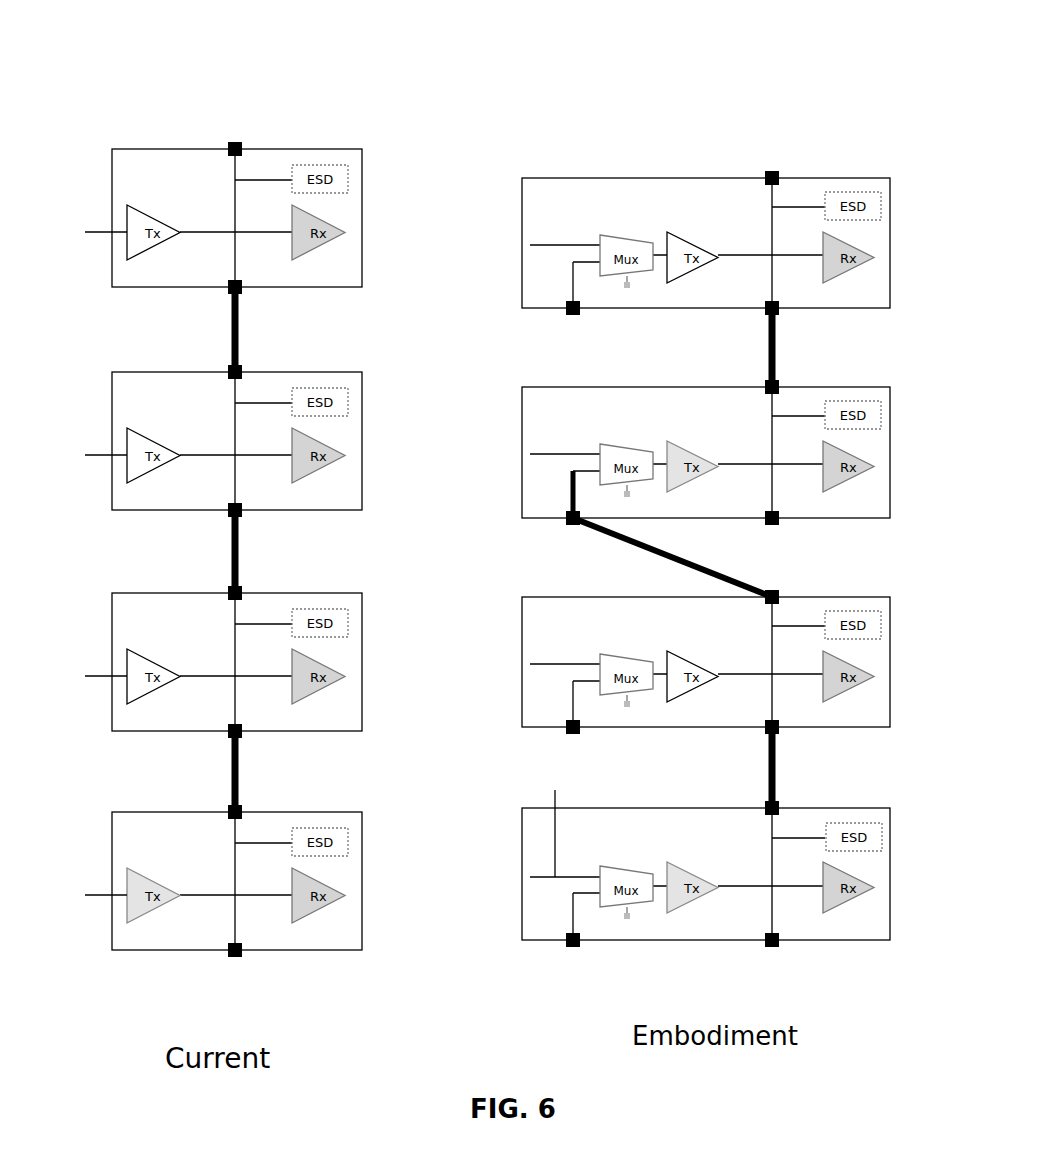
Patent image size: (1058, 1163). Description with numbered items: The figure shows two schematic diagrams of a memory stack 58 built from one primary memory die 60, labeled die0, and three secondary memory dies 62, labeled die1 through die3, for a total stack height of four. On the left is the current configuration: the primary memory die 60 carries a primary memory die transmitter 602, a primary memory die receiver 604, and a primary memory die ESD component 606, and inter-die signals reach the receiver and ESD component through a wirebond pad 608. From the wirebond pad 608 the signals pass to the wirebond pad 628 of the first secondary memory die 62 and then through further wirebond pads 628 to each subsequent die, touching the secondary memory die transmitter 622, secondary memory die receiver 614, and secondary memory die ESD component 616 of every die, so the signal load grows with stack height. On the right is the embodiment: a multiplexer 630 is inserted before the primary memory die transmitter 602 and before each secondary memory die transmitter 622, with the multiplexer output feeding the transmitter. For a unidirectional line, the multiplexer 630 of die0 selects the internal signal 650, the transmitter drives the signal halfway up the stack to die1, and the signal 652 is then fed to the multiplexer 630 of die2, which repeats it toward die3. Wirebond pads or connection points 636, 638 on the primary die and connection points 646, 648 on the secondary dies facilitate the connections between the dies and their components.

The memory stack 58 is at (230, 80).
The primary memory die 60 is at (362, 886).
The secondary memory die 62 is at (362, 218).
The primary memory die transmitter 602 is at (685, 785).
The primary memory die receiver 604 is at (898, 935).
The primary memory die ESD component 606 is at (915, 823).
The wirebond pad 608 is at (228, 955).
The secondary memory die receiver 614 is at (898, 719).
The secondary memory die ESD component 616 is at (915, 609).
The secondary memory die transmitter 622 is at (700, 667).
The wirebond pad 628 is at (228, 736).
The multiplexer 630 is at (622, 866).
The wirebond pad/connection point 636 is at (766, 945).
The wirebond pad/connection point 638 is at (568, 945).
The wirebond pad/connection point 646 is at (850, 762).
The mux path pad / through-silicon via 648 is at (568, 731).
The signal 650 is at (556, 820).
The signal 652 is at (573, 485).